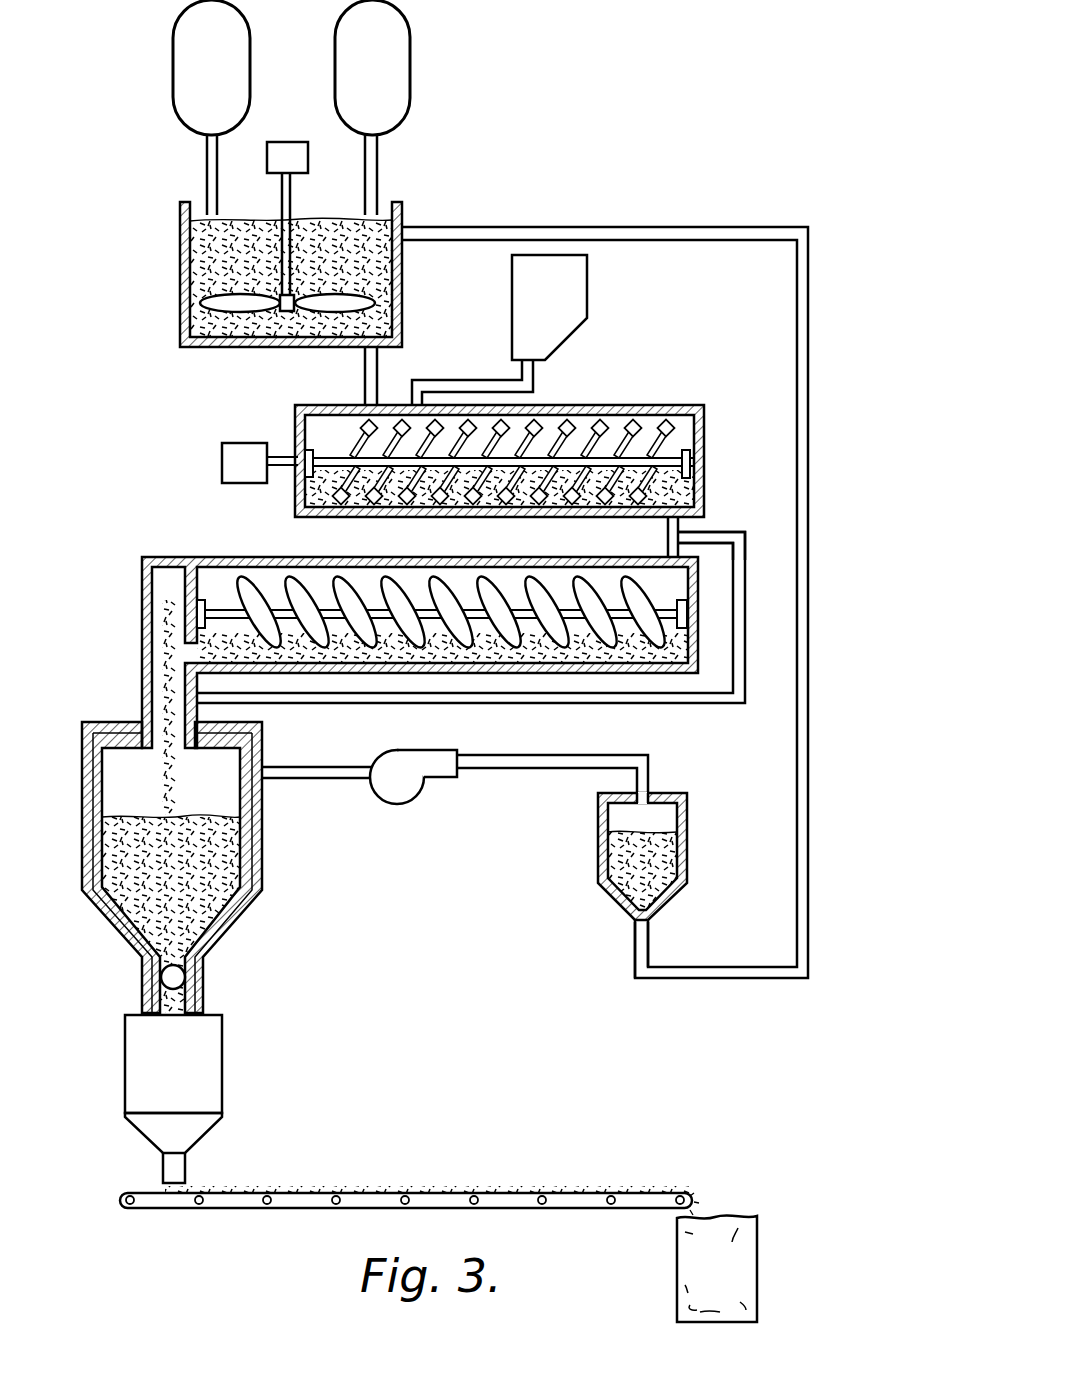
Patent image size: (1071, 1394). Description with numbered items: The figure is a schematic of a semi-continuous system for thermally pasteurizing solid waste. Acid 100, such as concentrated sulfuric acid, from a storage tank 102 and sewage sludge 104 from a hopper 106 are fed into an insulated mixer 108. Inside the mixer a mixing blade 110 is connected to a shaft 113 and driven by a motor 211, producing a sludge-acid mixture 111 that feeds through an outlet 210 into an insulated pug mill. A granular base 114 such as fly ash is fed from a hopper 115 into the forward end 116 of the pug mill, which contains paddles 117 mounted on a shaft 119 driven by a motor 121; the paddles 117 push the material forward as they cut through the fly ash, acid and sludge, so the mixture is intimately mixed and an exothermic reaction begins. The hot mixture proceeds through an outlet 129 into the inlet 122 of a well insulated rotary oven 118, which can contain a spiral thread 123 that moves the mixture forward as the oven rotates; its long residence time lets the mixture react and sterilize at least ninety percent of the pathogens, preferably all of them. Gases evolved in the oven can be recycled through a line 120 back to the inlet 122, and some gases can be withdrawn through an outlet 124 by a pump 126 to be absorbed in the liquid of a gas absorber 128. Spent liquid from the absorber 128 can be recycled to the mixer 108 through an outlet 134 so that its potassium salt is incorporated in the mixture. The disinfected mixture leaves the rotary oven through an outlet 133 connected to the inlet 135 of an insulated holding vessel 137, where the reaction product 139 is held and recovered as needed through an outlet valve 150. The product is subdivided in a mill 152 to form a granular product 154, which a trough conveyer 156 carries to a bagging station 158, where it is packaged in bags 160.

The acid 100 is at (211, 67).
The storage tank 102 is at (175, 107).
The sewage sludge 104 is at (372, 67).
The hopper 106 is at (407, 107).
The insulated mixer 108 is at (292, 247).
The mixing blade 110 is at (222, 302).
The sludge-acid mixture 111 is at (200, 226).
The shaft 113 is at (185, 258).
The granular base 114 is at (549, 307).
The hopper 115 is at (586, 307).
The forward end 116 is at (480, 375).
The paddles 117 is at (670, 428).
The rotary oven 118 is at (381, 660).
The shaft 119 is at (540, 438).
The line 120 is at (610, 703).
The motor 121 is at (238, 443).
The inlet 122 is at (695, 572).
The spiral thread 123 is at (345, 590).
The outlet 124 is at (302, 765).
The pump 126 is at (420, 795).
The gas absorber 128 is at (598, 860).
The outlet 129 is at (668, 530).
The outlet 133 is at (185, 640).
The outlet 134 is at (637, 937).
The inlet 135 is at (160, 676).
The insulated holding vessel 137 is at (187, 867).
The reaction product 139 is at (262, 866).
The outlet valve 150 is at (200, 977).
The mill 152 is at (222, 1053).
The granular product 154 is at (262, 1190).
The trough conveyer 156 is at (440, 1197).
The bagging station 158 is at (688, 1180).
The bags 160 is at (677, 1260).
The outlet 210 is at (365, 370).
The motor 211 is at (290, 142).